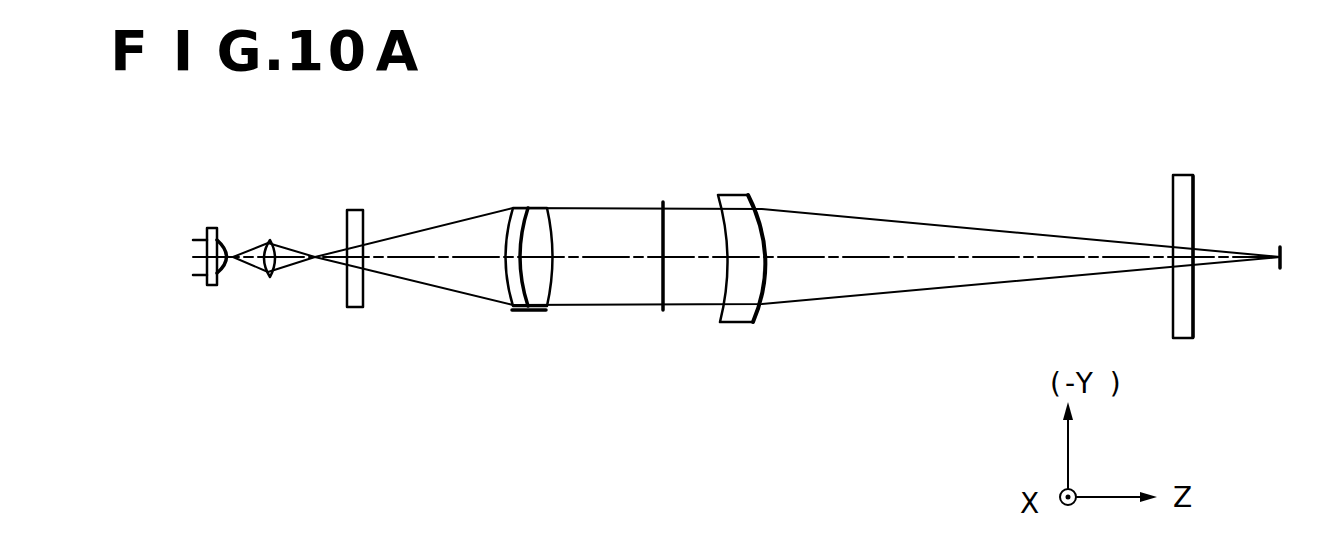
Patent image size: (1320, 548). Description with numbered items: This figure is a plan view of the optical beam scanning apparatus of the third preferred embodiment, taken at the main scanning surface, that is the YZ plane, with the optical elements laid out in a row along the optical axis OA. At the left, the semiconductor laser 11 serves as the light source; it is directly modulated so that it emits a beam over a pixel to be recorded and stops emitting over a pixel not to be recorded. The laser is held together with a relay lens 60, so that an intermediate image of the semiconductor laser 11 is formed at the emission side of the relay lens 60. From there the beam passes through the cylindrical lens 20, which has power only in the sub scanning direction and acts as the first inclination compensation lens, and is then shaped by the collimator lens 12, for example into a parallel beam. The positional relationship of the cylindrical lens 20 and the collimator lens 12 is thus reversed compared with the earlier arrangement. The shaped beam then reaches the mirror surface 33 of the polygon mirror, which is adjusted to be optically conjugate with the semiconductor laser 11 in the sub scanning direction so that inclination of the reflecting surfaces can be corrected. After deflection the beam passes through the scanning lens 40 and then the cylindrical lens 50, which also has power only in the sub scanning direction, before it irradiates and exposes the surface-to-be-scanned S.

The semiconductor laser 11 is at (228, 286).
The relay lens 60 is at (277, 277).
The cylindrical lens 20 is at (358, 300).
The collimator lens 12 is at (527, 326).
The mirror surface 33 is at (664, 310).
The scanning lens 40 is at (753, 322).
The optical axis OA is at (907, 257).
The cylindrical lens 50 is at (1180, 335).
The surface-to-be-scanned S is at (1277, 272).